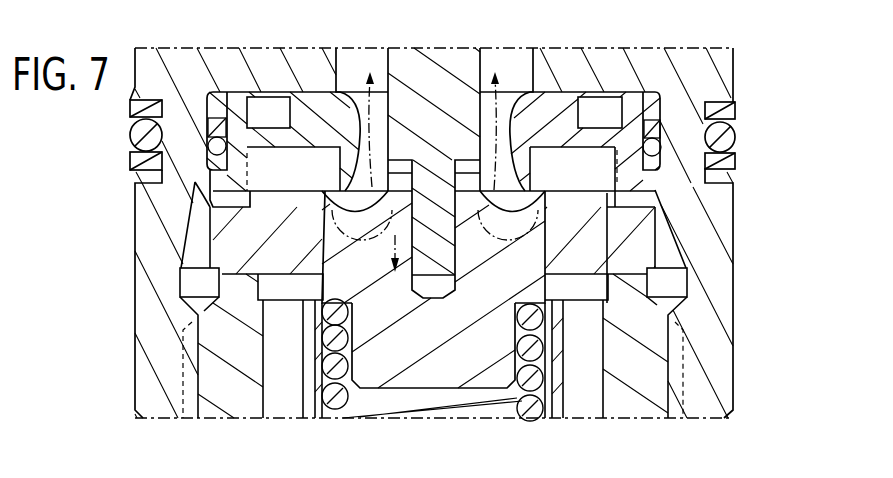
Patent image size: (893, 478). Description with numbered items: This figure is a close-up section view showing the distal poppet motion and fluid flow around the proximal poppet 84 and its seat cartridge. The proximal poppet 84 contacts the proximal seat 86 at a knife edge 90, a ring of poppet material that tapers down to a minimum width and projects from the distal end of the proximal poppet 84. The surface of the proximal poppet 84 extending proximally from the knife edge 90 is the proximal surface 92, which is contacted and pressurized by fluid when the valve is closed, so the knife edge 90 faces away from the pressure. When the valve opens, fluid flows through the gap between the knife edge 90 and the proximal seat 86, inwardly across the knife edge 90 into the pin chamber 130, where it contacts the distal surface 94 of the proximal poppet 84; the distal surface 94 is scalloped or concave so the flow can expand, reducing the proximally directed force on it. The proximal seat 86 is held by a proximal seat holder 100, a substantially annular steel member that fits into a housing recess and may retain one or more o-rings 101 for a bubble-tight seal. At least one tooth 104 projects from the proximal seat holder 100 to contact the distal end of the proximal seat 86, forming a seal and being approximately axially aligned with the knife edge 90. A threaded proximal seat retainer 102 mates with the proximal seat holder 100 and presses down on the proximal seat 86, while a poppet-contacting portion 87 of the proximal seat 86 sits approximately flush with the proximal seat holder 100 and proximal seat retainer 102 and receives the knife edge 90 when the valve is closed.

The proximal seat holder 100 is at (213, 97).
The tooth 104 is at (333, 142).
The pin chamber 130 is at (353, 60).
The distal surface 94 is at (380, 155).
The proximal seat 86 is at (552, 145).
The o-ring 101 is at (657, 140).
The knife edge 90 is at (537, 195).
The poppet-contacting portion 87 is at (327, 193).
The proximal seat retainer 102 is at (240, 273).
The proximal surface 92 is at (325, 340).
The proximal poppet 84 is at (463, 375).